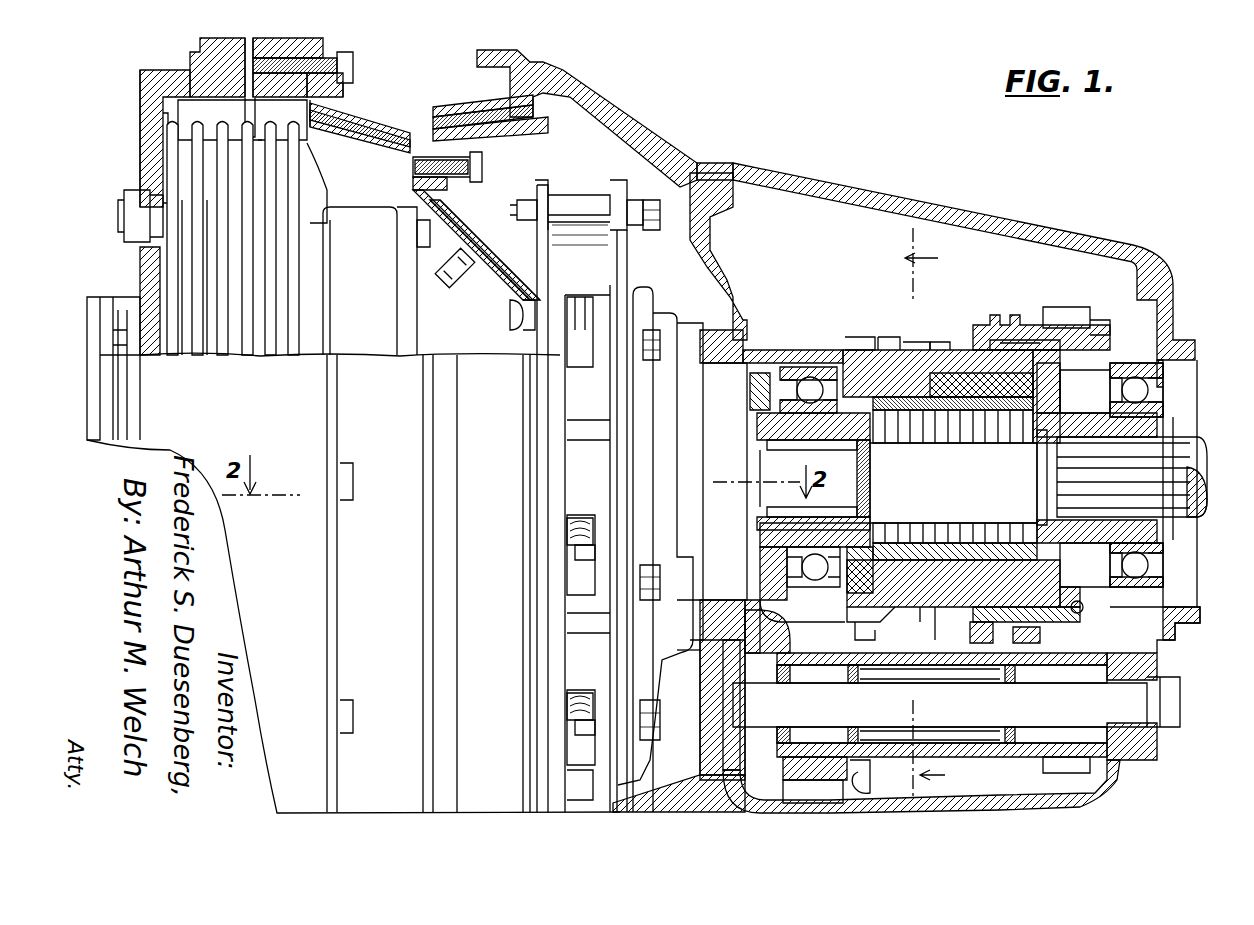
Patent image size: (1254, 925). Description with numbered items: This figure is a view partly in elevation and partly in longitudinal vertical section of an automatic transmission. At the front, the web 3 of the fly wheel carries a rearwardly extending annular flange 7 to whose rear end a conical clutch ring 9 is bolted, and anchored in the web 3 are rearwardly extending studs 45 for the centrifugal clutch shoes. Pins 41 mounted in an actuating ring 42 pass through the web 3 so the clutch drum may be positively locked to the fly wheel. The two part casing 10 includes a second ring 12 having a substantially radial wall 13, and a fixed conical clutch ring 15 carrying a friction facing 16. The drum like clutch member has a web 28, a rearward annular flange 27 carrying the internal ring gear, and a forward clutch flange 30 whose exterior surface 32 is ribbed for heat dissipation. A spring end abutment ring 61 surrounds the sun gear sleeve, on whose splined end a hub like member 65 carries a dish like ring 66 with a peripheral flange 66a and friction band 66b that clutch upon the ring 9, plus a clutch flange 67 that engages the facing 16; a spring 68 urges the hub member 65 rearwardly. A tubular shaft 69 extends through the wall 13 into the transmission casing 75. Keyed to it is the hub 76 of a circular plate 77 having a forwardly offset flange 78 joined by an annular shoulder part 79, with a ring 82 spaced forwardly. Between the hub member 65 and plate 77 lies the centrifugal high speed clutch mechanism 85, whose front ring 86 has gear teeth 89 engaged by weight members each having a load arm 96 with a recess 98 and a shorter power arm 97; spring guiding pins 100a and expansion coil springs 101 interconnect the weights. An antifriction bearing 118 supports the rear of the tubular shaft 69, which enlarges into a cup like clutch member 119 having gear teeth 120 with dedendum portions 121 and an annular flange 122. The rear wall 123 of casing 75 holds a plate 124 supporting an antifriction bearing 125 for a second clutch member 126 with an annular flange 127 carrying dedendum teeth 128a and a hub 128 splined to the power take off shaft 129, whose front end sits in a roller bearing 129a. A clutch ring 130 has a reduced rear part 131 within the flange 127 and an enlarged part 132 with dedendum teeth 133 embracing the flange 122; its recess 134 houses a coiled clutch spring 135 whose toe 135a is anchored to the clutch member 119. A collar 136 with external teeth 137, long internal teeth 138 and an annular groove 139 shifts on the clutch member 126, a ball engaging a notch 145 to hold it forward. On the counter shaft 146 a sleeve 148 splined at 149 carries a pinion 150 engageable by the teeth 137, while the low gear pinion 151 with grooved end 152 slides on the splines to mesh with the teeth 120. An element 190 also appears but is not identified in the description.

The web 3 is at (140, 125).
The annular flange 7 is at (200, 52).
The conical clutch ring 9 is at (140, 100).
The two part casing 10 is at (546, 57).
The second ring 12 is at (660, 800).
The radial wall 13 is at (720, 268).
The fixed clutch ring 15 is at (445, 110).
The friction facing 16 is at (468, 110).
The annular flange 27 is at (365, 215).
The web 28 is at (324, 168).
The clutch flange 30 is at (236, 127).
The ribbed exterior surface 32 is at (255, 120).
The pins 41 is at (128, 316).
The actuating ring 42 is at (90, 298).
The studs 45 is at (128, 190).
The spring end abutment ring 61 is at (417, 232).
The hub like member 65 is at (700, 520).
The dish like ring 66 is at (455, 220).
The peripheral flange 66a is at (413, 165).
The friction band 66b is at (380, 112).
The clutch flange 67 is at (495, 137).
The spring 68 is at (510, 318).
The tubular shaft 69 is at (795, 450).
The transmission casing 75 is at (1145, 777).
The hub 76 is at (750, 398).
The circular plate 77 is at (660, 312).
The forwardly offset flange 78 is at (645, 215).
The annular shoulder part 79 is at (645, 285).
The ring 82 is at (537, 244).
The centrifugal high speed clutch mechanism 85 is at (586, 187).
The front ring 86 is at (600, 490).
The gear teeth 89 is at (510, 222).
The load arm 96 is at (612, 372).
The power arm 97 is at (567, 575).
The recess 98 is at (567, 752).
The spring guiding pin 100a is at (567, 527).
The expansion coil spring 101 is at (575, 553).
The antifriction bearing 118 is at (815, 367).
The cup like clutch member 119 is at (880, 337).
The gear teeth 120 is at (865, 337).
The dedendum portions 121 is at (915, 325).
The annular flange 122 is at (920, 425).
The rear wall 123 is at (1150, 745).
The plate 124 is at (1175, 310).
The antifriction bearing 125 is at (1165, 372).
The second clutch member 126 is at (1040, 440).
The annular flange 127 is at (965, 350).
The hub 128 is at (1150, 425).
The dedendum teeth 128a is at (935, 605).
The power take off shaft 129 is at (1200, 465).
The roller bearing 129a is at (838, 455).
The clutch ring 130 is at (942, 350).
The rear end part 131 is at (1050, 570).
The enlarged part 132 is at (900, 608).
The dedendum teeth 133 is at (930, 342).
The clutch spring recess 134 is at (962, 440).
The coiled clutch spring 135 is at (985, 445).
The toe 135a is at (878, 527).
The collar 136 is at (1100, 316).
The external gear teeth 137 is at (1075, 307).
The internal gear teeth 138 is at (1030, 342).
The annular groove 139 is at (1005, 325).
The notch 145 is at (1012, 667).
The counter shaft 146 is at (956, 702).
The counter shaft sleeve 148 is at (940, 667).
The splines 149 is at (895, 665).
The pinion 150 is at (1043, 768).
The low gear pinion 151 is at (783, 778).
The annular grooved end 152 is at (868, 778).
The lock screw 190 is at (1077, 601).